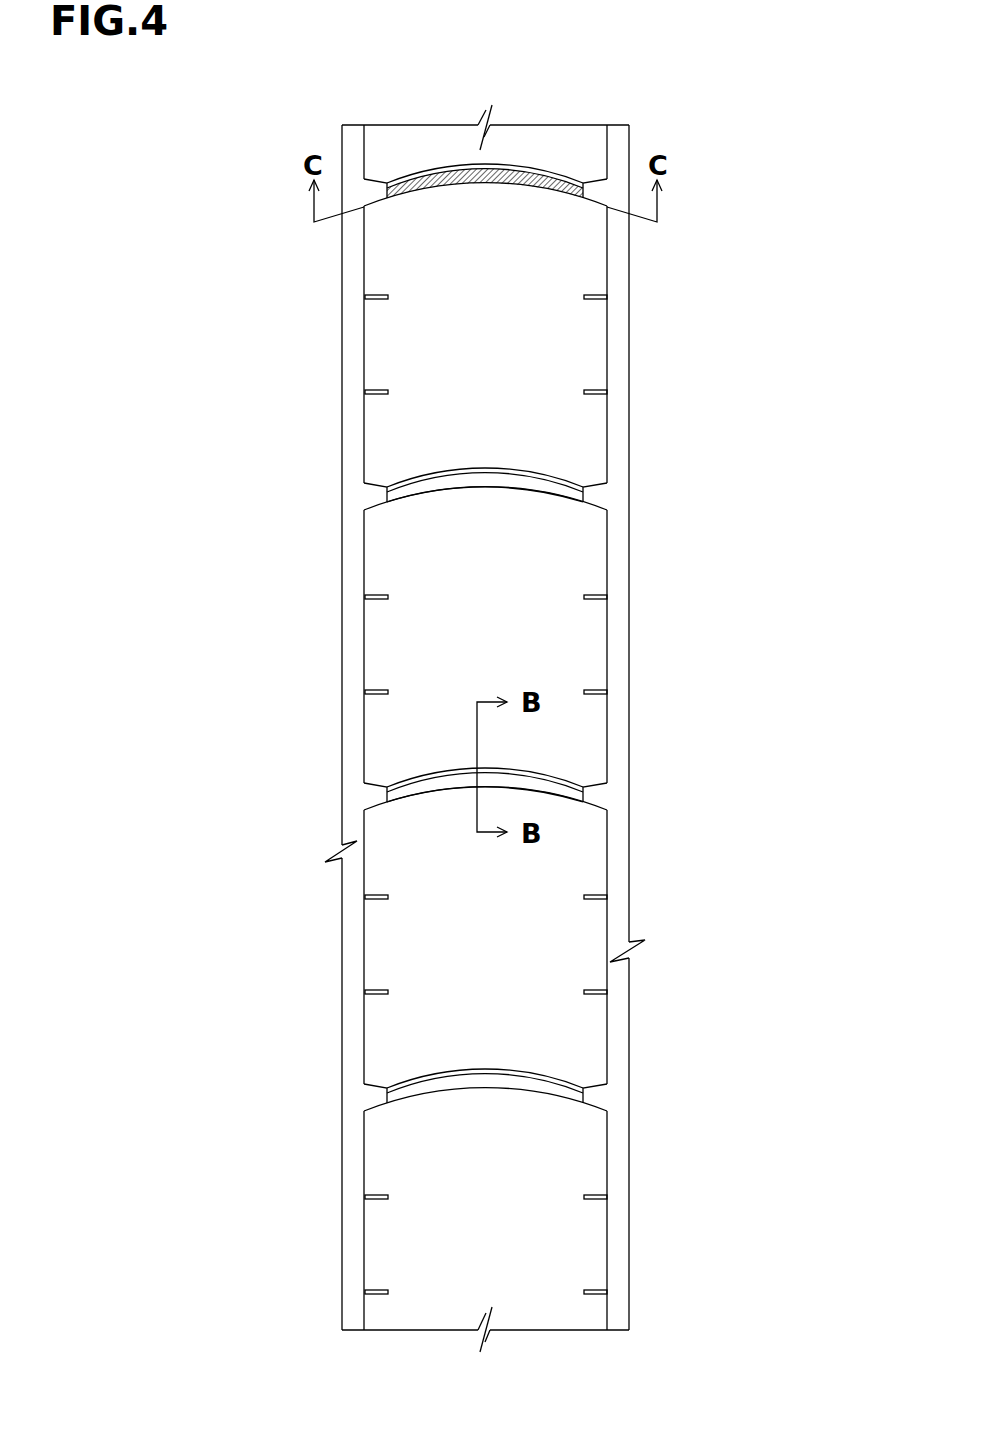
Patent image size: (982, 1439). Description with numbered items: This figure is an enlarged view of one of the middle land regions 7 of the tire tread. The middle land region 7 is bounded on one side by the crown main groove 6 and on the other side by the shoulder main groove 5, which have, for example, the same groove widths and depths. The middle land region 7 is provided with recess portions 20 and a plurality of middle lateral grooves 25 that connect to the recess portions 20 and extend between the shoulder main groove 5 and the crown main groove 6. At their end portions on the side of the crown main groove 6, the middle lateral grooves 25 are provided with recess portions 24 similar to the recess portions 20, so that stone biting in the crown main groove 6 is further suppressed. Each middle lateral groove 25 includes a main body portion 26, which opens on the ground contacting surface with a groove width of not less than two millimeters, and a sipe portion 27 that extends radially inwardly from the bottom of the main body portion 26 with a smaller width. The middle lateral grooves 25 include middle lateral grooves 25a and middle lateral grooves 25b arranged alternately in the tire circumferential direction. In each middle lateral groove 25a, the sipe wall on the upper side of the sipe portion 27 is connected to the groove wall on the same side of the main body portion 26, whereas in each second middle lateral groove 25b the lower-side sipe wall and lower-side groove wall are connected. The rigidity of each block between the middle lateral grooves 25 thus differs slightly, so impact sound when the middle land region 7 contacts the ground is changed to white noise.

The shoulder main groove 5 is at (615, 173).
The crown main groove 6 is at (355, 173).
The middle land region 7 is at (458, 242).
The recess portion 20 is at (600, 503).
The recess portion 24 is at (377, 497).
The middle lateral groove 25 is at (530, 178).
The middle lateral groove 25a is at (737, 343).
The second middle lateral groove 25b is at (737, 642).
The main body portion 26 is at (540, 490).
The sipe portion 27 is at (495, 478).